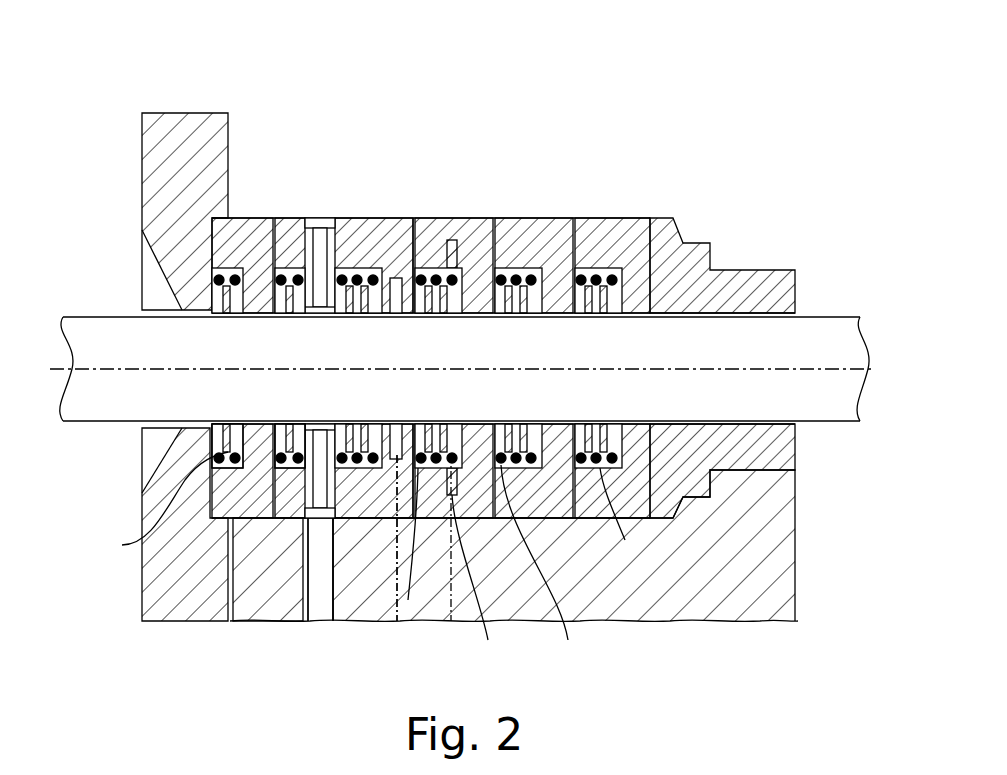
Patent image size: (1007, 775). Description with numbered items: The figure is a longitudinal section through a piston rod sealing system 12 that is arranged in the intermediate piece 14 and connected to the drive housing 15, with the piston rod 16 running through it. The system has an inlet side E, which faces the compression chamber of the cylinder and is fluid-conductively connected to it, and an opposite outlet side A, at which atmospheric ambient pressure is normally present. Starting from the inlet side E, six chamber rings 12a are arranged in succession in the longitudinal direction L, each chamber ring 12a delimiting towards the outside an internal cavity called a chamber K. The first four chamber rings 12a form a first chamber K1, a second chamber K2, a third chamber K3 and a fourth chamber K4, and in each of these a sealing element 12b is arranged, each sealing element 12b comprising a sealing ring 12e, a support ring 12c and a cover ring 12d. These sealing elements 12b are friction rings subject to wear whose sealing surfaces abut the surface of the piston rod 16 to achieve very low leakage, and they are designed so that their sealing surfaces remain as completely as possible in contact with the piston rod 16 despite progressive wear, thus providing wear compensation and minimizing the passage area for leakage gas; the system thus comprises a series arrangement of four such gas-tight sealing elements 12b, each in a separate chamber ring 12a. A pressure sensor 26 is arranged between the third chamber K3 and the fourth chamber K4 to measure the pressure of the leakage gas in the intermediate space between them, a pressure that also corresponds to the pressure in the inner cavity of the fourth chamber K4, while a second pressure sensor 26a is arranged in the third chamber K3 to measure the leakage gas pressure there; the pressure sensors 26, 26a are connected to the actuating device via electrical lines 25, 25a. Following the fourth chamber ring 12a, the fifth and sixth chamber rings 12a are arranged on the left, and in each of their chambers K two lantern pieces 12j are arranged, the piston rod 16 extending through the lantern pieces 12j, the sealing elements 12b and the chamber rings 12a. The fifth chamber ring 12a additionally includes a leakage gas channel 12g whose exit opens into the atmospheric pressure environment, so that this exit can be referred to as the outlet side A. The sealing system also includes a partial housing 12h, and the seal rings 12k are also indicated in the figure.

The piston rod sealing system 12 is at (805, 113).
The chamber ring 12a is at (287, 218).
The sealing element 12b is at (358, 127).
The support ring 12c is at (346, 284).
The cover ring 12d is at (378, 284).
The sealing ring 12e is at (361, 284).
The leakage gas channel 12g is at (313, 218).
The partial housing 12h is at (780, 290).
The lantern piece 12j is at (216, 445).
The seal ring 12k is at (516, 276).
The intermediate piece 14 is at (712, 580).
The drive housing 15 is at (188, 112).
The piston rod 16 is at (103, 397).
The electrical line 25 is at (395, 620).
The electrical line 25a is at (456, 594).
The pressure sensor 26 is at (408, 600).
The second pressure sensor 26a is at (488, 640).
The chamber K is at (245, 520).
The first chamber K1 is at (625, 540).
The second chamber K2 is at (578, 466).
The third chamber K3 is at (437, 592).
The fourth chamber K4 is at (305, 560).
The outlet side A is at (307, 700).
The inlet side E is at (865, 300).
The longitudinal direction L is at (820, 375).